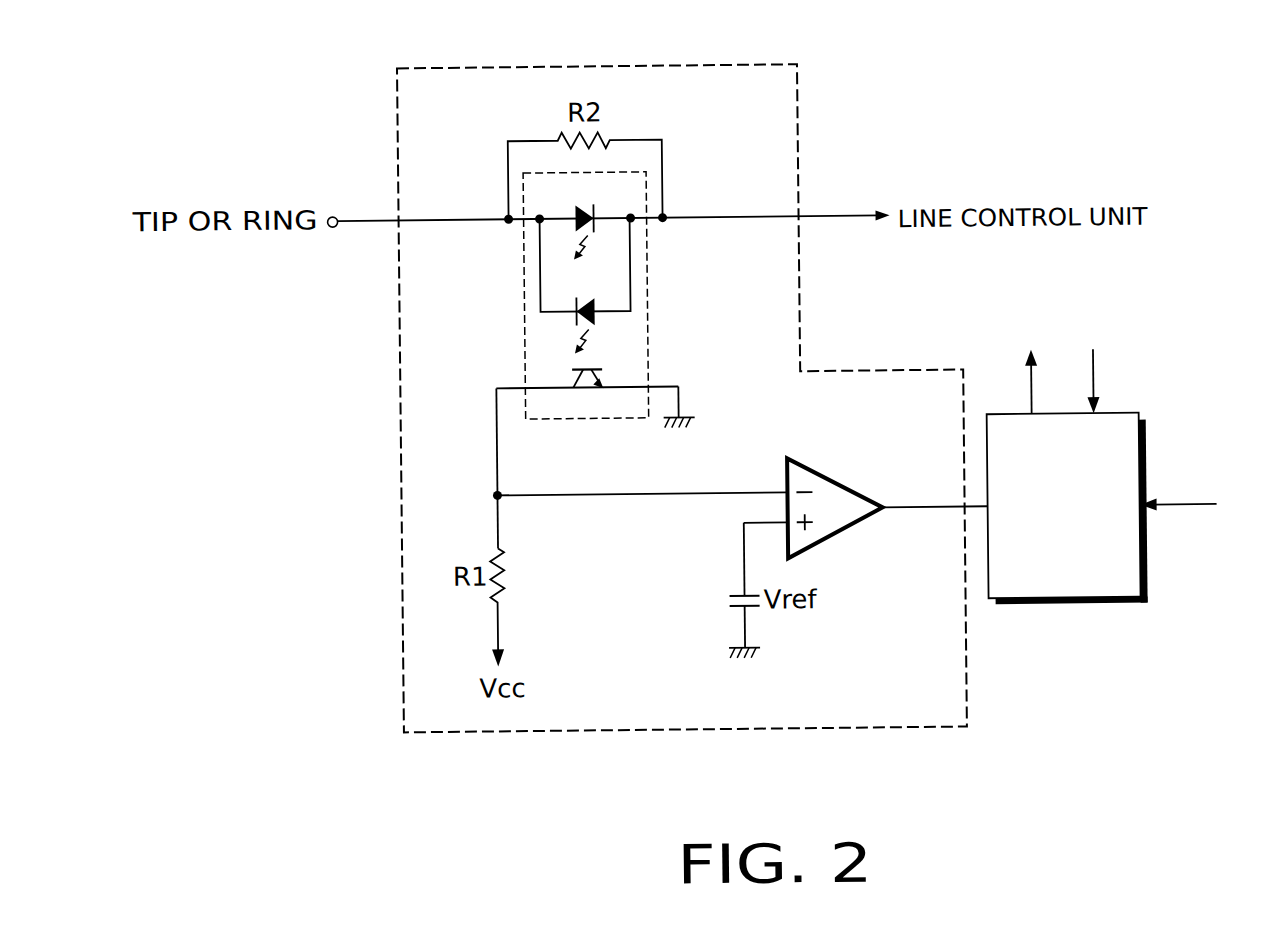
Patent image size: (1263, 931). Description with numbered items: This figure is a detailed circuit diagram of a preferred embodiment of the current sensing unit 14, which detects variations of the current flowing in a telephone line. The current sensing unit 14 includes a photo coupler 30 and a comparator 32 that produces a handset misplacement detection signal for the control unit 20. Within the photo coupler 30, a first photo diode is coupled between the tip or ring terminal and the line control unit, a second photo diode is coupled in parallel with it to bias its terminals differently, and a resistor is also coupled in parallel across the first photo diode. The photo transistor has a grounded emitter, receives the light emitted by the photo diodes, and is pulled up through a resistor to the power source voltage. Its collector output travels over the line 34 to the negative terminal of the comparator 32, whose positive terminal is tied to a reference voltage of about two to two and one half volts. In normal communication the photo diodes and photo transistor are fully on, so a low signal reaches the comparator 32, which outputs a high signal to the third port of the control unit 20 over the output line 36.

The current sensing unit 14 is at (826, 122).
The control unit 20 is at (1064, 606).
The photo coupler 30 is at (525, 351).
The comparator 32 is at (835, 480).
The line 34 is at (619, 497).
The comparator output line 36 is at (924, 511).